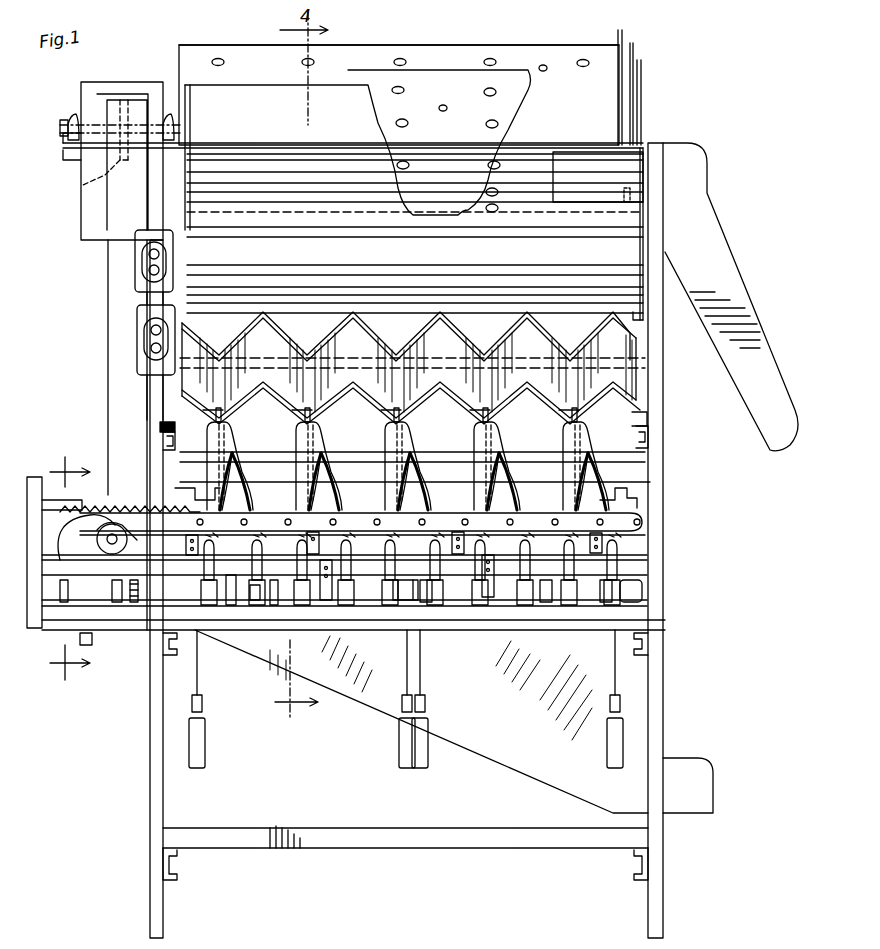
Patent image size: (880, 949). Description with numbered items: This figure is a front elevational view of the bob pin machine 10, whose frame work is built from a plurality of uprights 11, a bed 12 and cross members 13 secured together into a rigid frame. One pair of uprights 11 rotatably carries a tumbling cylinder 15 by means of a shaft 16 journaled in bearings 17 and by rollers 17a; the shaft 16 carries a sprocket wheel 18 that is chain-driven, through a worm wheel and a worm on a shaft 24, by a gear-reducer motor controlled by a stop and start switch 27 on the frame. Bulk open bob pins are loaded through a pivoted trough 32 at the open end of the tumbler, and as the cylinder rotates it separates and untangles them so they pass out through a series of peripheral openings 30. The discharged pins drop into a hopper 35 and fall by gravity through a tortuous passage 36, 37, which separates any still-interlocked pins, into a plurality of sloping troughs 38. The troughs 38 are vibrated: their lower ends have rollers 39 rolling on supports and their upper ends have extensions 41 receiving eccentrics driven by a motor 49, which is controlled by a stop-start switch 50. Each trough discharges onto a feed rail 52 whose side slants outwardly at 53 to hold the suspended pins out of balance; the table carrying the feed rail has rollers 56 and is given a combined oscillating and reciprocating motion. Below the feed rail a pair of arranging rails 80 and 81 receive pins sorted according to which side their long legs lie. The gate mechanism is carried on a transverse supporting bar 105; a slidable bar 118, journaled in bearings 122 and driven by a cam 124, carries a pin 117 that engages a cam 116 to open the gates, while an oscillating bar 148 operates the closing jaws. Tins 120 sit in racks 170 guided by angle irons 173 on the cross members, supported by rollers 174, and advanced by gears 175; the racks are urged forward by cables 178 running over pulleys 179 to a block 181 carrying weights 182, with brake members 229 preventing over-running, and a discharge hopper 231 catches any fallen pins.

The bob pin machine 10 is at (674, 559).
The uprights 11 is at (150, 740).
The bed 12 is at (112, 571).
The cross members 13 is at (502, 620).
The tumbling cylinder 15 is at (437, 50).
The shaft 16 is at (62, 130).
The bearings 17 is at (72, 122).
The rollers 17a is at (625, 196).
The sprocket wheel 18 is at (82, 185).
The shaft 24 is at (70, 569).
The stop and start switch 27 is at (136, 352).
The peripheral openings 30 is at (487, 62).
The pivoted trough 32 is at (718, 254).
The hopper 35 is at (202, 95).
The tortuous passage 36 is at (408, 263).
The tortuous passage 37 is at (412, 293).
The sloping troughs 38 is at (340, 350).
The rollers 39 is at (165, 445).
The extensions 41 is at (160, 428).
The motor 49 is at (314, 363).
The stop-start switch 50 is at (135, 266).
The feed rail 52 is at (216, 432).
The slanting side 53 is at (210, 440).
The rollers 56 is at (172, 496).
The arranging rail 80 is at (300, 478).
The arranging rail 81 is at (332, 490).
The transverse supporting bar 105 is at (260, 565).
The cam 116 is at (342, 542).
The pin 117 is at (430, 543).
The slidable bar 118 is at (208, 540).
The tins 120 is at (478, 562).
The bearings 122 is at (195, 555).
The cam 124 is at (109, 546).
The bar 148 is at (436, 520).
The racks 170 is at (228, 590).
The angle irons 173 is at (219, 605).
The rollers 174 is at (431, 602).
The gears 175 is at (526, 600).
The cables 178 is at (200, 678).
The pulleys 179 is at (195, 583).
The block 181 is at (203, 704).
The weights 182 is at (205, 748).
The members 229 is at (123, 580).
The discharge hopper 231 is at (525, 763).